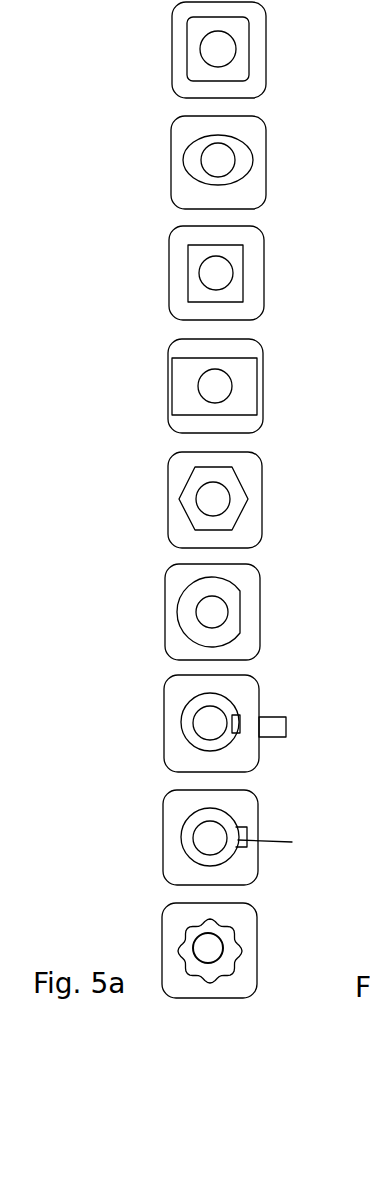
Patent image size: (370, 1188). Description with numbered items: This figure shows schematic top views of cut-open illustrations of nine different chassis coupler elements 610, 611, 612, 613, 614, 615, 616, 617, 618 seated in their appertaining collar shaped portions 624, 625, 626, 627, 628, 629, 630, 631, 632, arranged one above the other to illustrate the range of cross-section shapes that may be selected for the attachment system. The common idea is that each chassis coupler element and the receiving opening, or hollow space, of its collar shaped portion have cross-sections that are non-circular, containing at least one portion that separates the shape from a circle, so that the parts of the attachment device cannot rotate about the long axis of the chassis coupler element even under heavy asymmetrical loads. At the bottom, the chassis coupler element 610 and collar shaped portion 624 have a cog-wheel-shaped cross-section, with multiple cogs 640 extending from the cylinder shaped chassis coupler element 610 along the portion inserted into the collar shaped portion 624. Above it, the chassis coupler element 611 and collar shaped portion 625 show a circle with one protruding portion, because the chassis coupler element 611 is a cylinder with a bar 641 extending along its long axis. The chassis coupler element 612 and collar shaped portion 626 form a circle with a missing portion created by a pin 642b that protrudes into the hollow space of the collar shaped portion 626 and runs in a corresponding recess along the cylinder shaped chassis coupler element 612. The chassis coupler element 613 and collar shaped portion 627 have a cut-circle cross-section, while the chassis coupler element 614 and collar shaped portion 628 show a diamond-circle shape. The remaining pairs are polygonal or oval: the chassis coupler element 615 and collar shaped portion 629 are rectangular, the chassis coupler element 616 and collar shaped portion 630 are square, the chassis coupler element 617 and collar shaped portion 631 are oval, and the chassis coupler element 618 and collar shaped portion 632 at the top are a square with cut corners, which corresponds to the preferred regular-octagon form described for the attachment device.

The chassis coupler element 610 is at (220, 937).
The chassis coupler element 611 is at (227, 827).
The chassis coupler element 612 is at (222, 707).
The chassis coupler element 613 is at (227, 602).
The chassis coupler element 614 is at (235, 490).
The chassis coupler element 615 is at (243, 377).
The chassis coupler element 616 is at (233, 260).
The chassis coupler element 617 is at (245, 155).
The chassis coupler element 618 is at (238, 33).
The collar shaped portion 624 is at (157, 957).
The collar shaped portion 625 is at (165, 855).
The collar shaped portion 626 is at (170, 745).
The collar shaped portion 627 is at (172, 628).
The collar shaped portion 628 is at (167, 513).
The collar shaped portion 629 is at (165, 410).
The collar shaped portion 630 is at (165, 293).
The collar shaped portion 631 is at (175, 183).
The collar shaped portion 632 is at (180, 62).
The cogs 640 is at (235, 962).
The bar 641 is at (287, 846).
The pin 642b is at (272, 728).